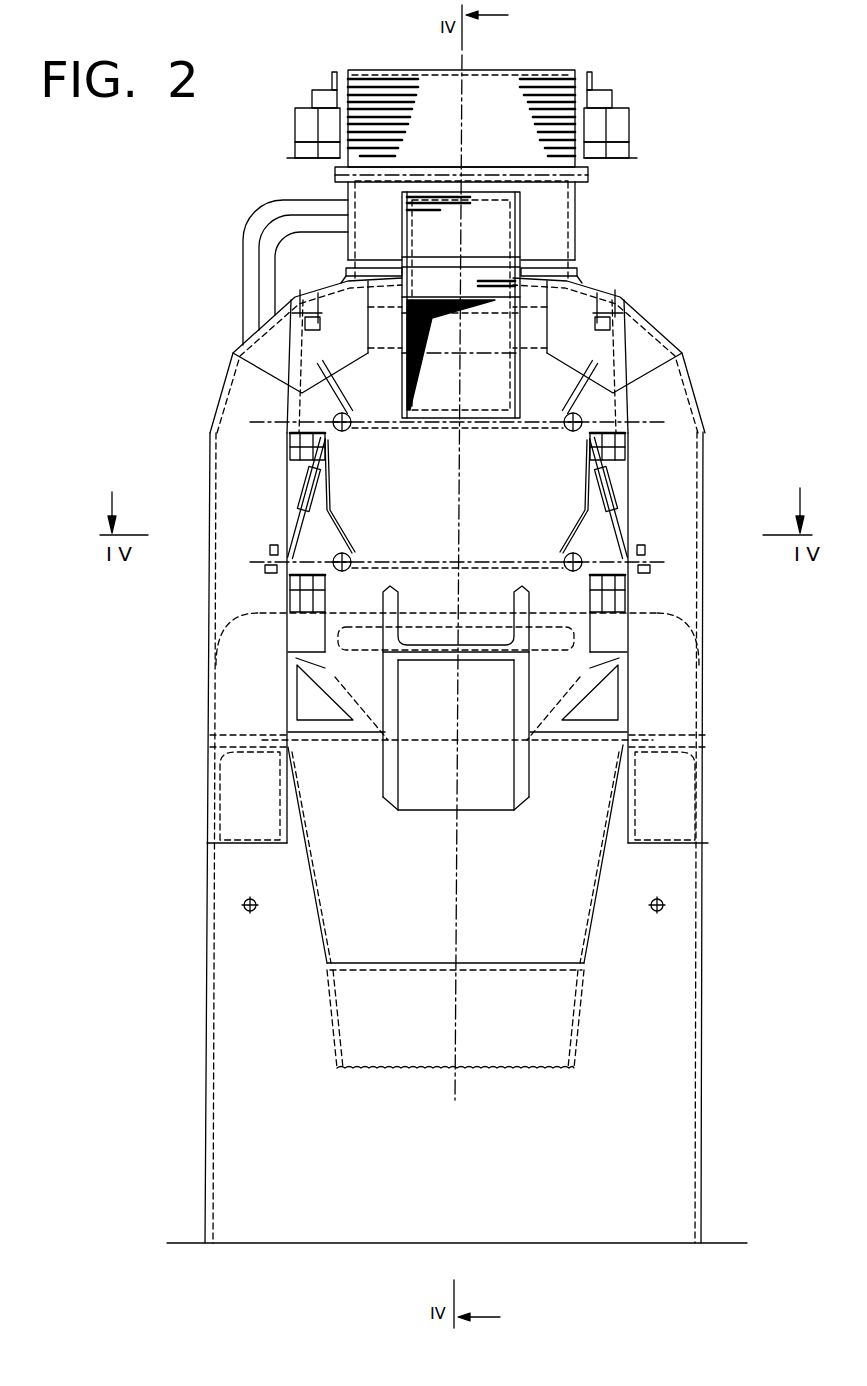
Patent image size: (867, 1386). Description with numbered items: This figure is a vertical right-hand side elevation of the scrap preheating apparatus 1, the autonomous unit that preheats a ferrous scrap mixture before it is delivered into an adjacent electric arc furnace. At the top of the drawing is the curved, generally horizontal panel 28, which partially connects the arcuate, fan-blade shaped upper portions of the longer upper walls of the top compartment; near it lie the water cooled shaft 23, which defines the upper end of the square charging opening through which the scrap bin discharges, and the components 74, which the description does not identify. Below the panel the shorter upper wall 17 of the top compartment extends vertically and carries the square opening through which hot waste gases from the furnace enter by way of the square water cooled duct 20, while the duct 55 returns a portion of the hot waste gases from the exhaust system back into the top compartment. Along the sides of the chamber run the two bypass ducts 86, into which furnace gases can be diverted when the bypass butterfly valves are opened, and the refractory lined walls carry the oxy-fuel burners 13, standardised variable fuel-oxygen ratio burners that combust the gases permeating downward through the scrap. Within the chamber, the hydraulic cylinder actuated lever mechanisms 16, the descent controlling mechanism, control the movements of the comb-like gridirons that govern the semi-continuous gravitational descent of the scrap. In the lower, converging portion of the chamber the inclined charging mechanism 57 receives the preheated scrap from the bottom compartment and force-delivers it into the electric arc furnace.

The scrap preheating apparatus 1 is at (672, 311).
The oxy-fuel burners 13 is at (244, 905).
The hydraulic cylinder actuated lever mechanisms 16 is at (300, 478).
The shorter upper wall 17 is at (558, 245).
The square water cooled duct 20 is at (518, 392).
The water cooled shaft 23 is at (588, 178).
The curved generally horizontal panel 28 is at (437, 70).
The duct 55 is at (248, 280).
The inclined ferrous scrap mixture charging mechanism 57 is at (537, 792).
The clamping device 74 is at (331, 78).
The bypass ducts 86 is at (212, 488).